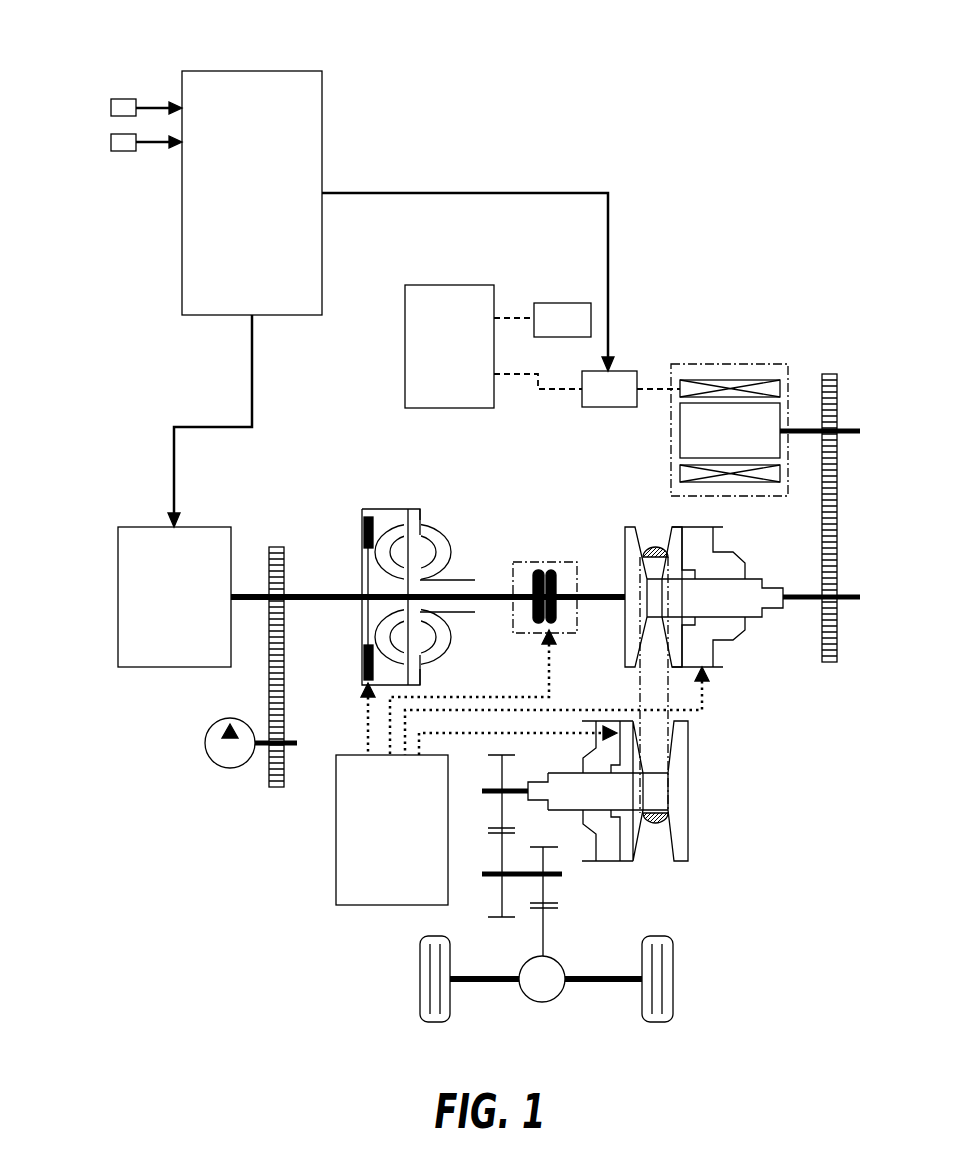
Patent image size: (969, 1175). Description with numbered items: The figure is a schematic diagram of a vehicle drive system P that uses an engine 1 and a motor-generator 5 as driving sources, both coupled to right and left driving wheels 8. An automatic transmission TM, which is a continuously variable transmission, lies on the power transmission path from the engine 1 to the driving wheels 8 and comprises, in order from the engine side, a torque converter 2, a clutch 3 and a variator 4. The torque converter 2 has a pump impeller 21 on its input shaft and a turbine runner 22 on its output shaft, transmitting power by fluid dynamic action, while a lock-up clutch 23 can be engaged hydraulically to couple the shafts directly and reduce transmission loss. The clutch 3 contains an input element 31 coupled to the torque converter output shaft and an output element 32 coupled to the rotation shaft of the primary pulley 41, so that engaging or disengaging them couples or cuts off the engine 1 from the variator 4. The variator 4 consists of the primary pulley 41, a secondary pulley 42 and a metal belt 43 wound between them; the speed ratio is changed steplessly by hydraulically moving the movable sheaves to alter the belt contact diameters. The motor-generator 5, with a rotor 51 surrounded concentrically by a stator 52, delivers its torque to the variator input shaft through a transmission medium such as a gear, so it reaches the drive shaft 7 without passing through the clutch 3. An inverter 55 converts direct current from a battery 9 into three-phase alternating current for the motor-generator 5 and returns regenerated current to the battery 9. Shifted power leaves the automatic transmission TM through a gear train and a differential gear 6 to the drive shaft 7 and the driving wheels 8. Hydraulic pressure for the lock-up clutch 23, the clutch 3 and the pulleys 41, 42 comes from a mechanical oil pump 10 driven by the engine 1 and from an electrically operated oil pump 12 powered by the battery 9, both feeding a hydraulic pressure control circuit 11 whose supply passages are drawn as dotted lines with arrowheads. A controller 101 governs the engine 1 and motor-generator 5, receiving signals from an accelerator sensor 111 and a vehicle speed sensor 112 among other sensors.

The controller 101 is at (236, 71).
The accelerator sensor 111 is at (111, 108).
The vehicle speed sensor 112 is at (111, 142).
The engine 1 is at (140, 527).
The battery 9 is at (445, 285).
The electrically operated type oil pump 12 is at (555, 303).
The inverter 55 is at (628, 371).
The motor-generator 5 is at (743, 404).
The rotor 51 is at (680, 440).
The stator 52 is at (680, 472).
The vehicle drive system P is at (716, 291).
The torque converter 2 is at (395, 598).
The pump impeller 21 is at (448, 541).
The turbine runner 22 is at (408, 522).
The lock-up clutch 23 is at (364, 528).
The clutch 3 is at (487, 608).
The input element 31 is at (538, 570).
The output element 32 is at (550, 570).
The oil pump 10 is at (214, 764).
The hydraulic pressure control circuit 11 is at (336, 862).
The variator 4 is at (632, 714).
The primary pulley 41 is at (748, 567).
The secondary pulley 42 is at (690, 838).
The metal belt 43 is at (654, 840).
The automatic transmission TM is at (820, 771).
The differential gear 6 is at (542, 1002).
The drive shaft 7 is at (482, 986).
The driving wheels 8 is at (420, 996).